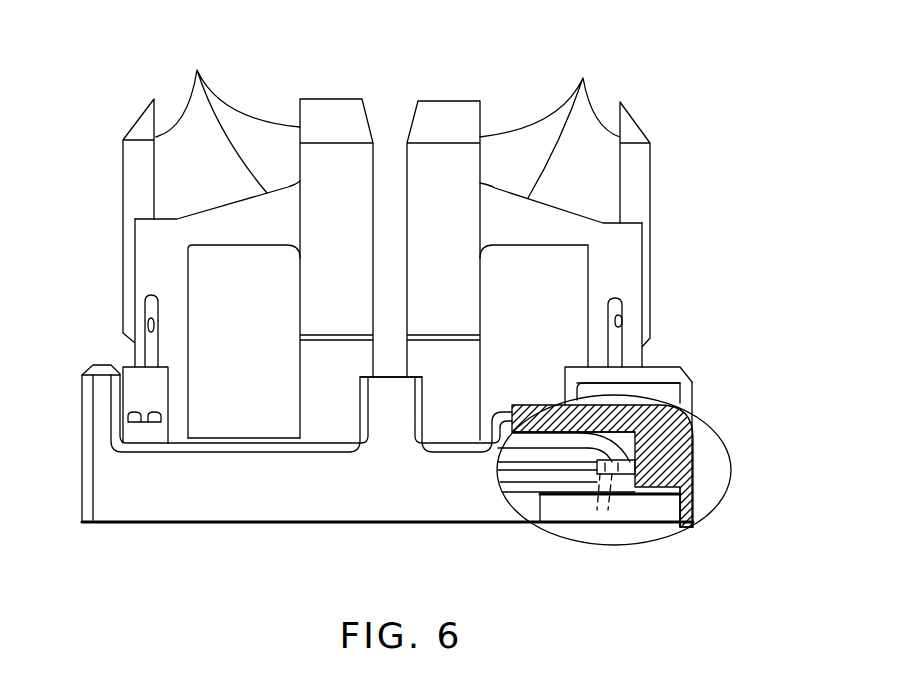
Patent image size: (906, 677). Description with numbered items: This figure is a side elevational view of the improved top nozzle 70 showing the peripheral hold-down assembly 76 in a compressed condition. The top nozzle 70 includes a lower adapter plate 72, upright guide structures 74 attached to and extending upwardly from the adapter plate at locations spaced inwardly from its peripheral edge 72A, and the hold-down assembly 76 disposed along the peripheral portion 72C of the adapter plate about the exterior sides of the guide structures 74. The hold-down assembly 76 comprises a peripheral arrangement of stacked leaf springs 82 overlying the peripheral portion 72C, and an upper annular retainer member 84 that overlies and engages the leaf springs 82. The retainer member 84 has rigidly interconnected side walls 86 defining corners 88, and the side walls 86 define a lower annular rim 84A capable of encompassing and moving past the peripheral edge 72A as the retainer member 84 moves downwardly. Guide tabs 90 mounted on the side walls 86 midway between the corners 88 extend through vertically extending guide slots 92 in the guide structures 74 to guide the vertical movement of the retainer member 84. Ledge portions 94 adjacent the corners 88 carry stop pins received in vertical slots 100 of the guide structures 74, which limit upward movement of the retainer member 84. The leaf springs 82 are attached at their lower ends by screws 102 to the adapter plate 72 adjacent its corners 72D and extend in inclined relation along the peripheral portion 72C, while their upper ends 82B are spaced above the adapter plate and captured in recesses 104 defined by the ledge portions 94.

The top nozzle 70 is at (683, 108).
The lower adapter plate 72 is at (623, 528).
The peripheral edge 72A is at (648, 508).
The peripheral portion 72C is at (693, 468).
The corners 72D is at (693, 513).
The upright guide structures 74 is at (386, 242).
The peripheral hold-down assembly 76 is at (690, 365).
The stacked leaf springs 82 is at (527, 468).
The upper ends 82B is at (600, 445).
The upper annular retainer member 84 is at (700, 422).
The lower annular rim 84A is at (683, 530).
The side walls 86 is at (278, 507).
The corners 88 is at (82, 497).
The guide tabs 90 is at (385, 375).
The guide slots 92 is at (372, 184).
The ledge portions 94 is at (580, 400).
The vertical slots 100 is at (148, 322).
The screws 102 is at (146, 435).
The recesses 104 is at (558, 413).